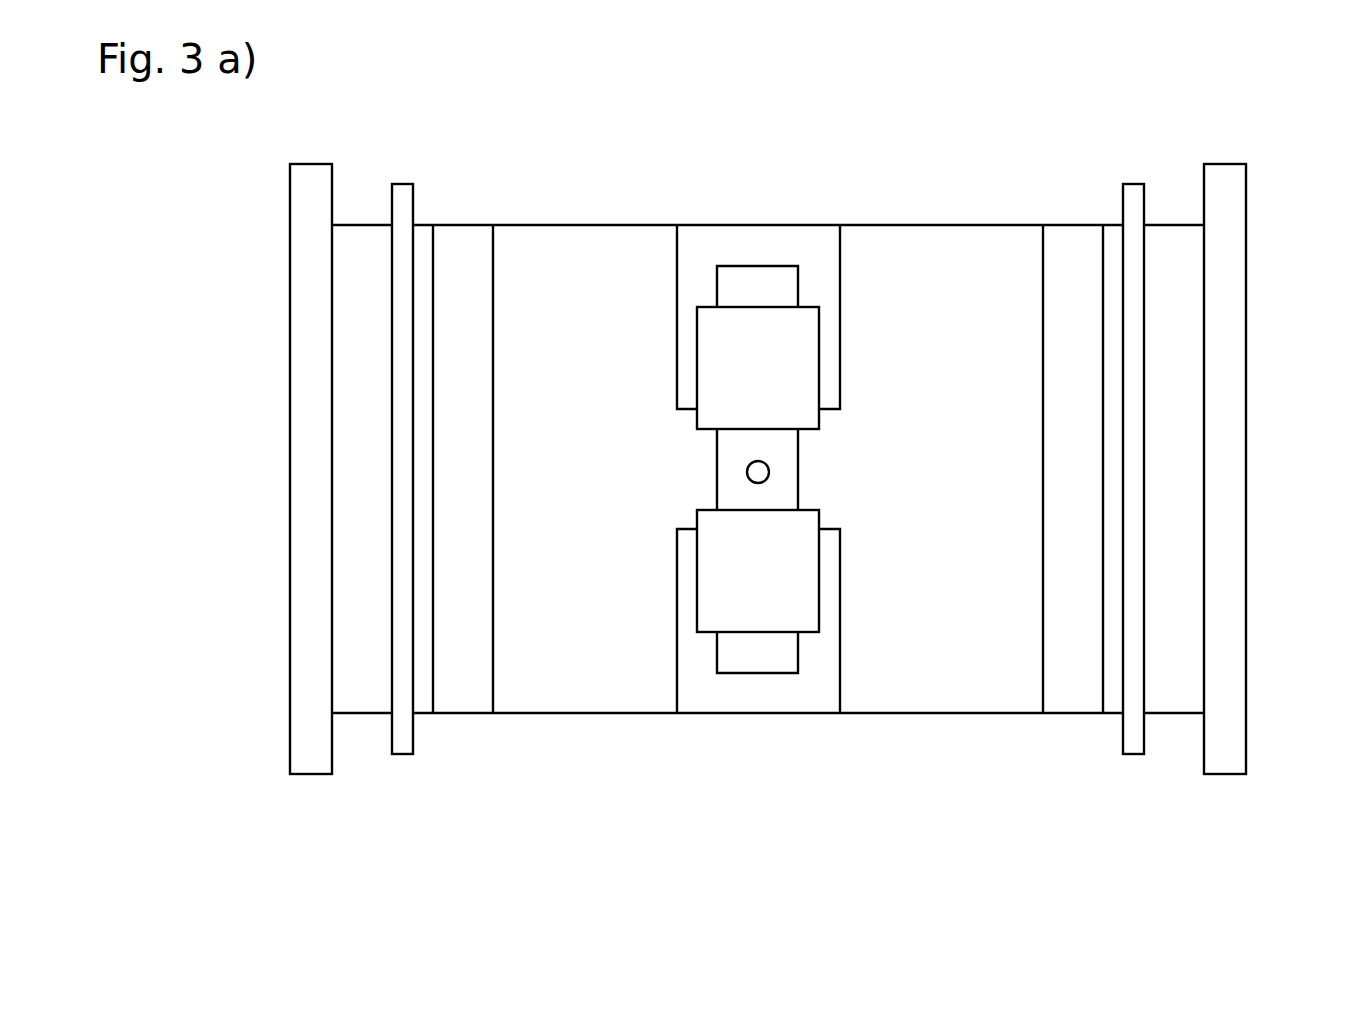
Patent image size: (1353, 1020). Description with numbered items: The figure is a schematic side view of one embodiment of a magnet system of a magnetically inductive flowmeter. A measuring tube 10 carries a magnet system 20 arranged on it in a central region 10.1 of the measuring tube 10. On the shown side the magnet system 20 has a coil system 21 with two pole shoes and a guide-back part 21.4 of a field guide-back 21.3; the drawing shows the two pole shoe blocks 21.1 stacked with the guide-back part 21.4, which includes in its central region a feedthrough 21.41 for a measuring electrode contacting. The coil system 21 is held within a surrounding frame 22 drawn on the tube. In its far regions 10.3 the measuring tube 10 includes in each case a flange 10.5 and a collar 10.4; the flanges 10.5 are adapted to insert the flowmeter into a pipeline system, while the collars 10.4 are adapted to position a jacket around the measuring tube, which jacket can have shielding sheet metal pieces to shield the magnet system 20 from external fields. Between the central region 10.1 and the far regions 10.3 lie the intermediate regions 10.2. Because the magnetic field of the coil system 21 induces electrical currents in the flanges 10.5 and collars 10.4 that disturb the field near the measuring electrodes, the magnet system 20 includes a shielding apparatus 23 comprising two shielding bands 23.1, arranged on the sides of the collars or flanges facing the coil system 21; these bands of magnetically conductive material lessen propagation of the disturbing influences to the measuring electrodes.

The measuring tube 10 is at (345, 347).
The central region 10.1 is at (766, 778).
The intermediate regions 10.2 is at (550, 790).
The far regions 10.3 is at (415, 810).
The collar 10.4 is at (402, 743).
The flange 10.5 is at (312, 763).
The magnet system 20 is at (836, 430).
The coil system 21 is at (836, 461).
The sensor element / magnet 21.1 is at (758, 469).
The field guide-back 21.3 is at (747, 286).
The guide-back part 21.4 is at (737, 652).
The feedthrough 21.41 is at (765, 473).
The bracket / guide 22 is at (808, 245).
The shielding apparatus 23 is at (1083, 247).
The shielding bands 23.1 is at (473, 246).